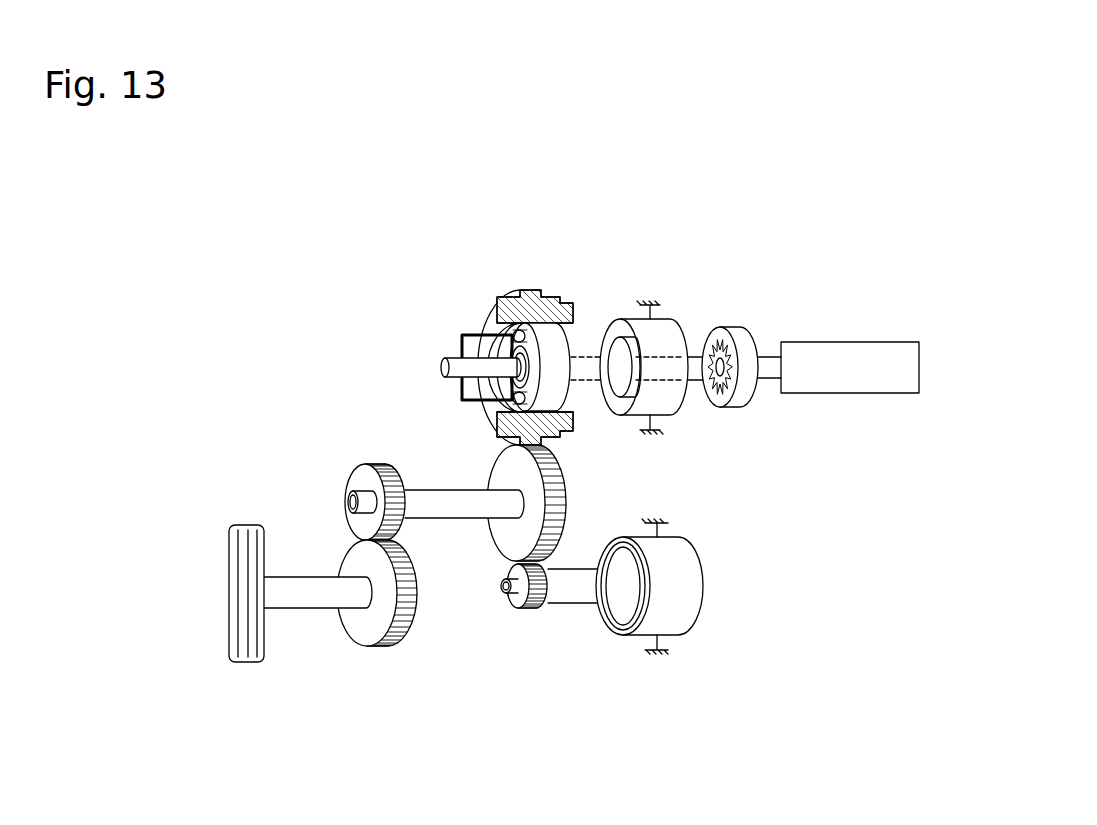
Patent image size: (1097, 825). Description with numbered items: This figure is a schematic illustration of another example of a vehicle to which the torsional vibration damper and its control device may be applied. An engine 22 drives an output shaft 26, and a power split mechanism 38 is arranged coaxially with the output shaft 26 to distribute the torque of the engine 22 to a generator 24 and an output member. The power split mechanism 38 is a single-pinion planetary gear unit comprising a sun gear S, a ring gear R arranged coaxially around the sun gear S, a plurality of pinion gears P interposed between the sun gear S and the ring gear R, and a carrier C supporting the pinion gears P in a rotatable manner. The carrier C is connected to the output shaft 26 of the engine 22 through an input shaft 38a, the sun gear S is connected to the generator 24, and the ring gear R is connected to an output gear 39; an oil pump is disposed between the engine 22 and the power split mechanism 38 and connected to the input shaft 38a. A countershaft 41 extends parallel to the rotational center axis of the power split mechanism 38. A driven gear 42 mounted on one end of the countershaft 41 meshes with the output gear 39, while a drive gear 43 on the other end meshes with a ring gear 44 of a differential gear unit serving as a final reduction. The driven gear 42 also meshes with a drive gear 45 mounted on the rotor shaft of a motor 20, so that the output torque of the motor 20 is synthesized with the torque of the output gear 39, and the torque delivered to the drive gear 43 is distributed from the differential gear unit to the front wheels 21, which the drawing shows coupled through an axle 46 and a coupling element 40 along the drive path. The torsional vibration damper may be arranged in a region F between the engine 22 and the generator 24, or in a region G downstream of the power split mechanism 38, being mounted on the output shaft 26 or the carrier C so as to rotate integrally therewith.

The motor 20 is at (680, 622).
The front wheels 21 is at (231, 645).
The engine 22 is at (890, 342).
The generator 24 is at (673, 403).
The output shaft 26 is at (767, 380).
The power split mechanism 38 is at (491, 302).
The input shaft 38a is at (447, 357).
The output gear 39 is at (560, 387).
The damper 40 is at (745, 393).
The countershaft 41 is at (450, 508).
The driven gear 42 is at (507, 547).
The drive gear 43 is at (377, 465).
The ring gear 44 is at (383, 650).
The drive gear 45 is at (530, 607).
The axle 46 is at (281, 582).
The region G is at (462, 222).
The region F is at (782, 292).
The carrier C is at (480, 336).
The sun gear S is at (478, 405).
The pinion gears P is at (510, 403).
The ring gear R is at (563, 424).